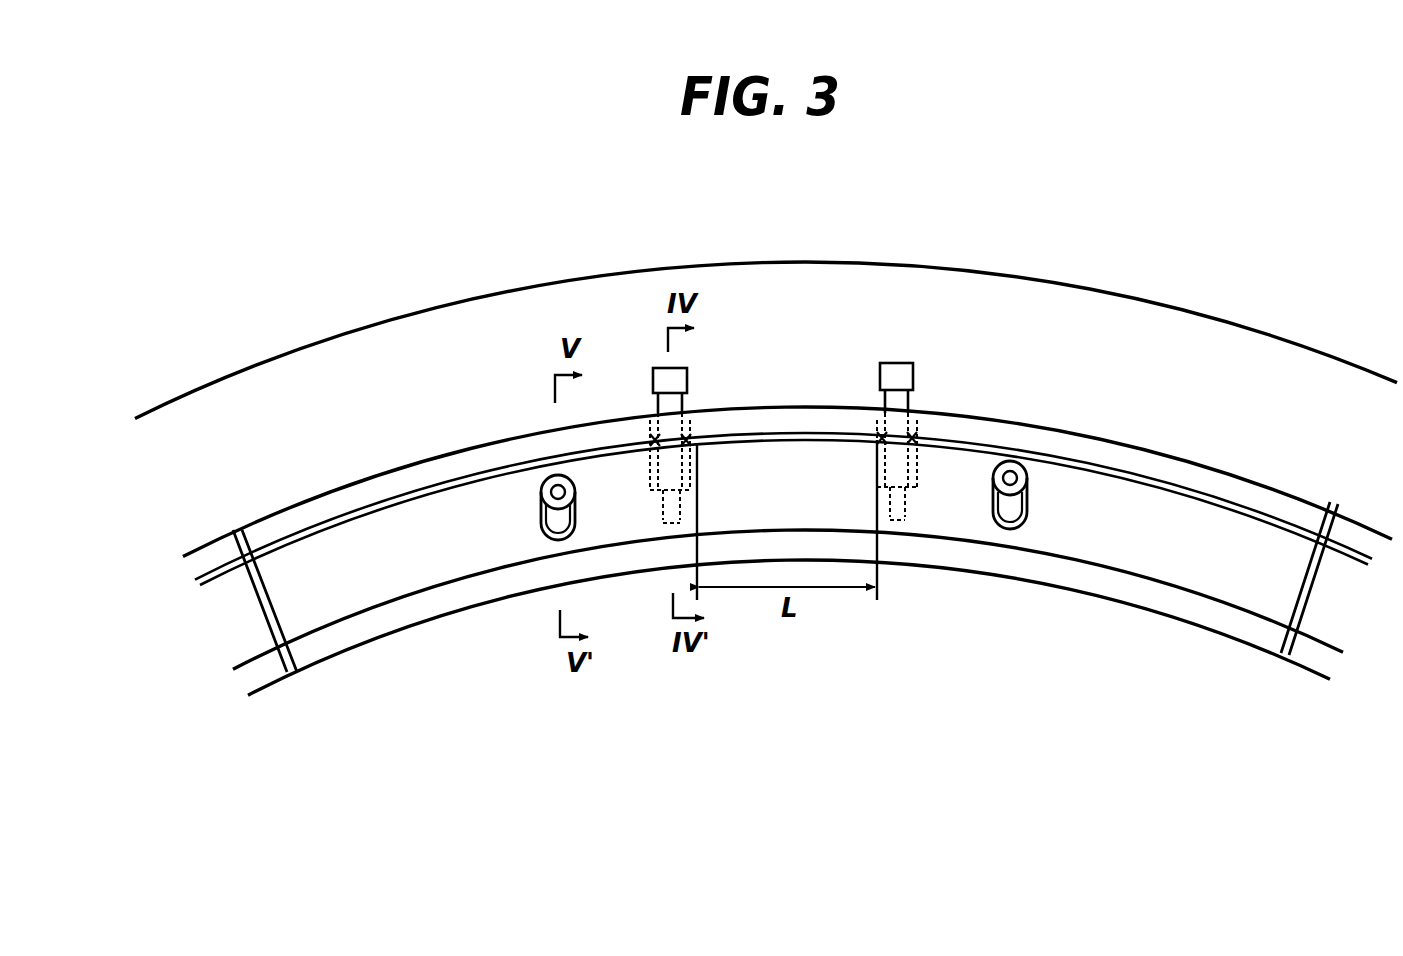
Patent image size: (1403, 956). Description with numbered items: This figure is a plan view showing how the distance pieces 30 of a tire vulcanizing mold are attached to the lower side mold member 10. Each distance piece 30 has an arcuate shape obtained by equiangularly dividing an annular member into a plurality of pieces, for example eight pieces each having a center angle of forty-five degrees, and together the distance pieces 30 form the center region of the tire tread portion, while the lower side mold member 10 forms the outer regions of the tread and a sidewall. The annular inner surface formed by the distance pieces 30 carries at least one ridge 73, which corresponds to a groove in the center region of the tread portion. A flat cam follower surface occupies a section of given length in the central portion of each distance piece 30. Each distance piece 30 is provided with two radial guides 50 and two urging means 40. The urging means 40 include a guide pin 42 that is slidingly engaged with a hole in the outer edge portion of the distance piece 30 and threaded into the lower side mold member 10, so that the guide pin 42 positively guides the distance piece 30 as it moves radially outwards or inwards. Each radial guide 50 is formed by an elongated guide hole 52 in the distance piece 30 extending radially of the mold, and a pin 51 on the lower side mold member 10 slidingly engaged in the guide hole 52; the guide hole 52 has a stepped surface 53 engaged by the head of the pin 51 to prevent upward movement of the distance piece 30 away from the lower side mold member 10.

The lower side mold member 10 is at (337, 390).
The distance piece 30 is at (415, 520).
The urging means 40 is at (801, 460).
The guide pin 42 is at (660, 378).
The radial guide 50 is at (789, 513).
The pin 51 is at (570, 469).
The elongated guide hole 52 is at (569, 527).
The stepped surface 53 is at (576, 503).
The ridge 73 is at (437, 597).